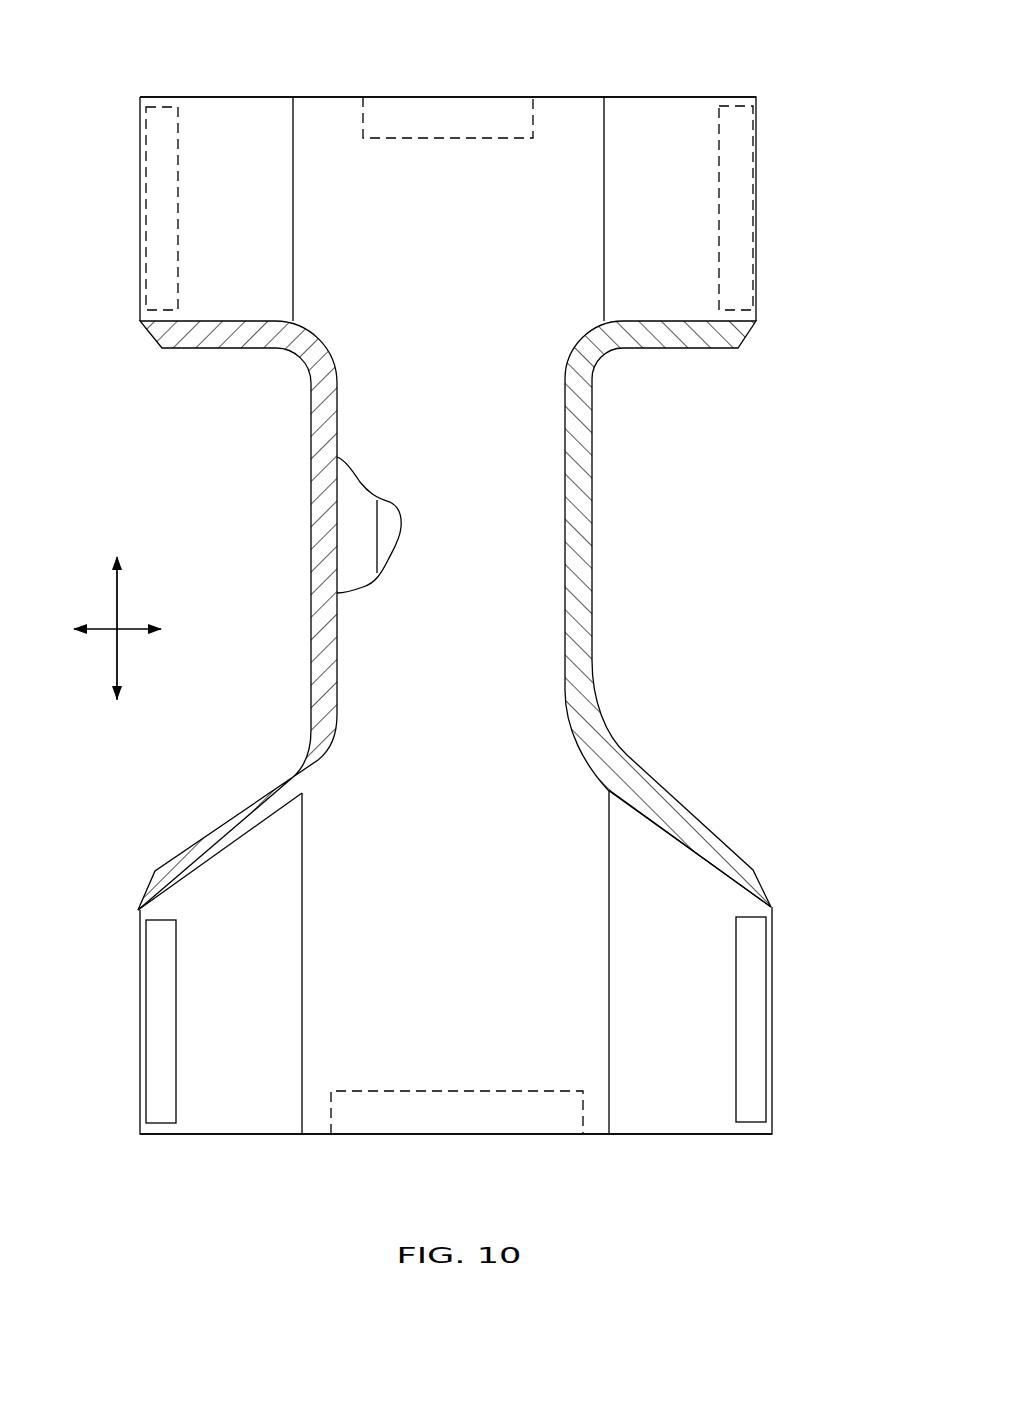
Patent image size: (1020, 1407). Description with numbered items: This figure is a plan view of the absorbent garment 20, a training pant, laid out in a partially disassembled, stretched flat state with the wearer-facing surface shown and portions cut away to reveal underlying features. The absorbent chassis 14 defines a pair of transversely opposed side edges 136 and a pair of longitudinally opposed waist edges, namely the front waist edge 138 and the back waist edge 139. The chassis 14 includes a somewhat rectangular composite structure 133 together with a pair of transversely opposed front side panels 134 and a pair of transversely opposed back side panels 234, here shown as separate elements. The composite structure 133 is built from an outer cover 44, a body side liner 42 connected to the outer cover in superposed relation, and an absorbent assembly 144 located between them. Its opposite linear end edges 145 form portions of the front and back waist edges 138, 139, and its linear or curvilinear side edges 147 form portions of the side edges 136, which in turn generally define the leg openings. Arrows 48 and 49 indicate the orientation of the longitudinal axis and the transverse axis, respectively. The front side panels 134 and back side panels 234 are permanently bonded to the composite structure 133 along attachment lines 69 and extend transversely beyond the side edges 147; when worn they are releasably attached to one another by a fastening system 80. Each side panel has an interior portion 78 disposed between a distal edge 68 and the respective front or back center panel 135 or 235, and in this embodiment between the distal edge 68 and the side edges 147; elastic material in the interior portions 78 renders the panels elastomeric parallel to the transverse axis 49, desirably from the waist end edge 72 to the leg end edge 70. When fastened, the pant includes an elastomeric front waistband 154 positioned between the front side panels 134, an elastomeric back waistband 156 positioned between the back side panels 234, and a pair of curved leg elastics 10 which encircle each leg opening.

The curved leg elastics 10 is at (310, 460).
The absorbent chassis 14 is at (572, 568).
The absorbent garment 20 is at (208, 94).
The body side liner 42 is at (407, 427).
The outer cover 44 is at (353, 527).
The longitudinal axis arrow 48 is at (117, 597).
The transverse axis arrow 49 is at (100, 630).
The distal edge 68 is at (140, 285).
The attachment lines 69 is at (295, 265).
The leg end edge 70 is at (260, 324).
The waist end edge 72 is at (257, 97).
The interior portion 78 is at (207, 272).
The fastening system 80 is at (167, 914).
The composite structure 133 is at (604, 203).
The front side panels 134 is at (192, 245).
The front center panel 135 is at (376, 166).
The side edges 136 is at (307, 717).
The front waist edge 138 is at (347, 97).
The back waist edge 139 is at (322, 1135).
The absorbent assembly 144 is at (390, 548).
The linear end edges 145 is at (577, 97).
The side edges of composite structure 147 is at (293, 178).
The elastomeric front waistband 154 is at (450, 97).
The elastomeric back waistband 156 is at (552, 1120).
The back side panels 234 is at (211, 1005).
The back center panel 235 is at (368, 1062).